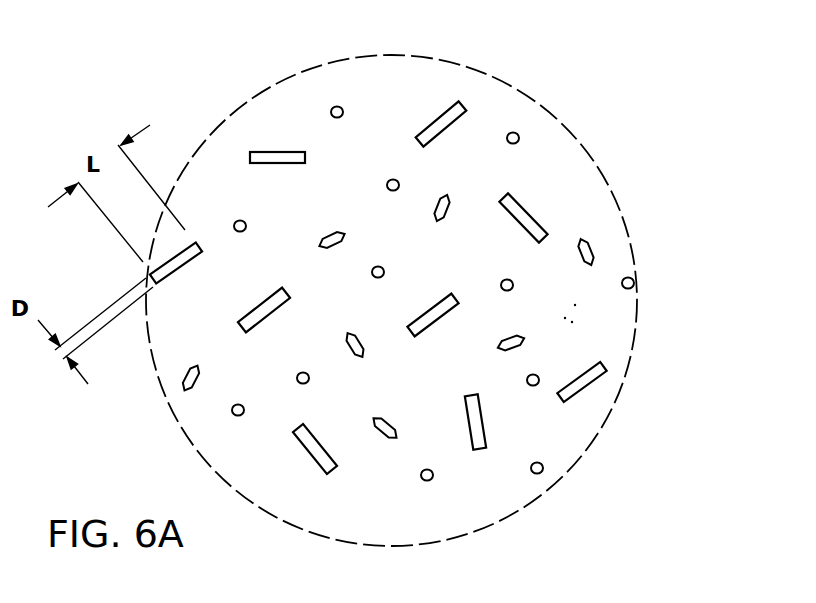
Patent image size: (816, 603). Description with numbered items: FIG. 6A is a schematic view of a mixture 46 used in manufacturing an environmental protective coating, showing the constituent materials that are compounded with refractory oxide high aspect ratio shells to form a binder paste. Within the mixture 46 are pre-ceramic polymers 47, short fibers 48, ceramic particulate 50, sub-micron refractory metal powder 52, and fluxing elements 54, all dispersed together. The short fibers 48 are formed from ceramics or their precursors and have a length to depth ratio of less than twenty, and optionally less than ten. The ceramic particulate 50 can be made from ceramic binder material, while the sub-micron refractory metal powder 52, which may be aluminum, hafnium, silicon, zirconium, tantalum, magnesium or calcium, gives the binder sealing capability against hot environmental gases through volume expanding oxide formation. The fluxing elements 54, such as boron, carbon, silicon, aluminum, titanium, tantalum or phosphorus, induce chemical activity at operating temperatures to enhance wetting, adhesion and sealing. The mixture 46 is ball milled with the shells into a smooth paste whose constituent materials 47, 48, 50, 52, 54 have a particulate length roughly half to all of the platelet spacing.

The mixture 46 is at (563, 110).
The pre-ceramic polymers 47 is at (435, 97).
The short fibers 48 is at (482, 420).
The ceramic particulate 50 is at (332, 110).
The sub-micron refractory metal powder 52 is at (570, 312).
The fluxing elements 54 is at (590, 250).